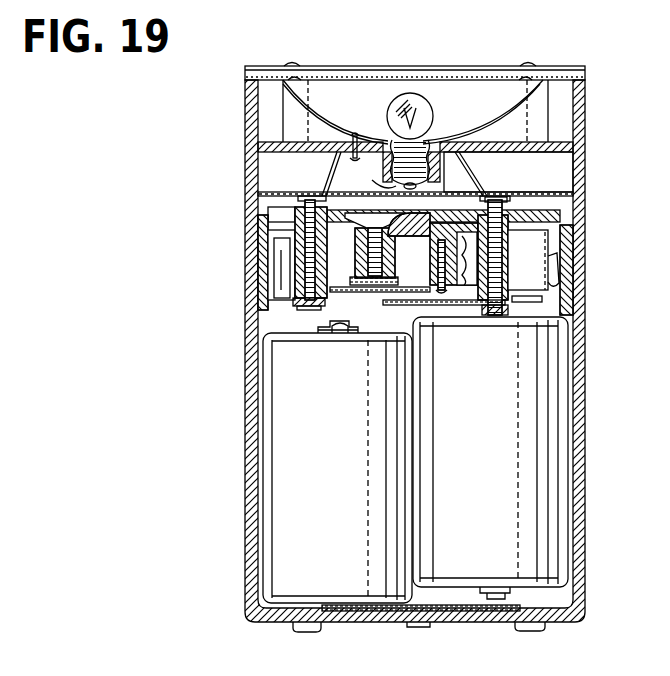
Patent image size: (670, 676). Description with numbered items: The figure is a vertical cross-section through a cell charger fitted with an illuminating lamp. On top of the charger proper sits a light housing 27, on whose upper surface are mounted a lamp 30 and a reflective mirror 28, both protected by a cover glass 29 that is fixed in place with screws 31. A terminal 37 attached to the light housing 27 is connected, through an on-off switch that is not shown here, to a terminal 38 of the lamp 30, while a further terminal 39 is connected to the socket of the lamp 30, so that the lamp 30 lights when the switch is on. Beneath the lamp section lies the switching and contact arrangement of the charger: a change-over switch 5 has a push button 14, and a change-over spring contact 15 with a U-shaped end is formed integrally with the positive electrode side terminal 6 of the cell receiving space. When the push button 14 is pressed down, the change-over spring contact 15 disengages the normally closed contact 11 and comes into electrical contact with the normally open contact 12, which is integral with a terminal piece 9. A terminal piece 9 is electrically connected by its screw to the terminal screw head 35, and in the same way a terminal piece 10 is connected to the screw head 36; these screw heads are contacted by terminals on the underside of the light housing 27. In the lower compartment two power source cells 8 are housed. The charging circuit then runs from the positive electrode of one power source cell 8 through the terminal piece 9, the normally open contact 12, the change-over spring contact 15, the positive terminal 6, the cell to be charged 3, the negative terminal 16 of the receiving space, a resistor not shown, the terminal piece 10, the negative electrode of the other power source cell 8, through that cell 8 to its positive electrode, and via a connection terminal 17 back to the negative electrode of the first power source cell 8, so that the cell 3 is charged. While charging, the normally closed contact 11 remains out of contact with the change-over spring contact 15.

The cell to be charged 3 is at (523, 302).
The change-over switch 5 is at (349, 255).
The positive electrode side terminal 6 is at (451, 210).
The power source cell 8 is at (283, 447).
The terminal piece 9 is at (259, 307).
The terminal piece 10 is at (505, 316).
The normally closed contact 11 is at (443, 258).
The normally open contact 12 is at (328, 324).
The push button 14 is at (345, 240).
The change-over spring contact 15 is at (356, 327).
The negative terminal 16 is at (562, 270).
The connection terminal 17 is at (441, 306).
The light housing 27 is at (578, 104).
The reflective mirror 28 is at (339, 124).
The cover glass 29 is at (410, 66).
The lamp 30 is at (432, 107).
The screws 31 is at (292, 66).
The terminal screw head 35 is at (262, 197).
The terminal screw head 36 is at (525, 202).
The terminal 37 is at (345, 162).
The lamp terminal 38 is at (368, 178).
The terminal 39 is at (470, 170).